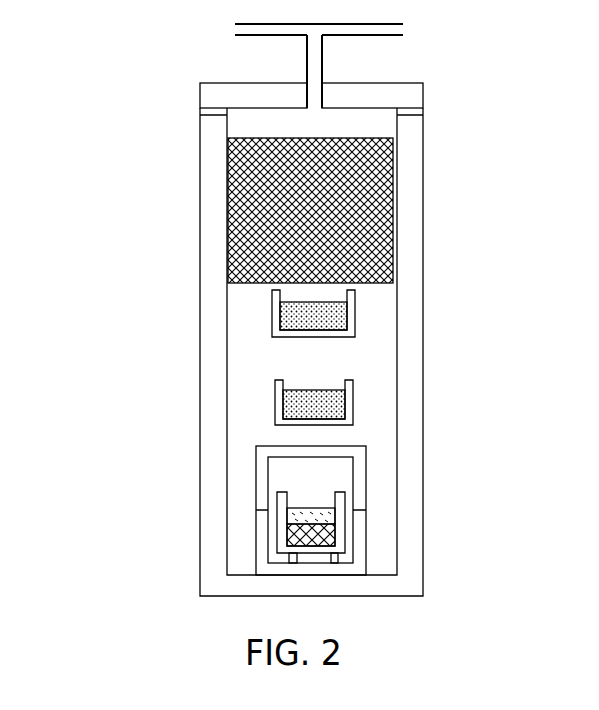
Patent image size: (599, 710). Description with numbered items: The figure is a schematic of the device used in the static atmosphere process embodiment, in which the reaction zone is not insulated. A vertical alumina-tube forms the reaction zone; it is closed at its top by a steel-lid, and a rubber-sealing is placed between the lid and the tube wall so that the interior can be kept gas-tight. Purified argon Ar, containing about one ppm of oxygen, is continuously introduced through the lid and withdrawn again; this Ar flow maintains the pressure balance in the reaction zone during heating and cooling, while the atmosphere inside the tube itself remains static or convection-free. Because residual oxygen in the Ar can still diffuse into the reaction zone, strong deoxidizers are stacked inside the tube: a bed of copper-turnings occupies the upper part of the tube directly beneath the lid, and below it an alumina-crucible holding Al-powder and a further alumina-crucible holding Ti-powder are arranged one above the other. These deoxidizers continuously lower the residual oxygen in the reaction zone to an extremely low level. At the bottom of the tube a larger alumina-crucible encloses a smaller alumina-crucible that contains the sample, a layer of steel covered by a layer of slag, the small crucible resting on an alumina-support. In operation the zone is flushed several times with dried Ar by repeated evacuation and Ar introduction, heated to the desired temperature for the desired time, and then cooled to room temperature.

The element Ar is at (245, 31).
The steel lid steel-lid is at (413, 92).
The rubber sealing rubber-sealing is at (215, 112).
The alumina tube alumina-tube is at (208, 302).
The copper turnings copper-turnings is at (250, 190).
The alumina crucible alumina-crucible is at (260, 533).
The aluminum powder Al-powder is at (337, 320).
The titanium powder Ti-powder is at (333, 408).
The element slag is at (320, 515).
The element steel is at (325, 538).
The alumina support alumina-support is at (287, 558).